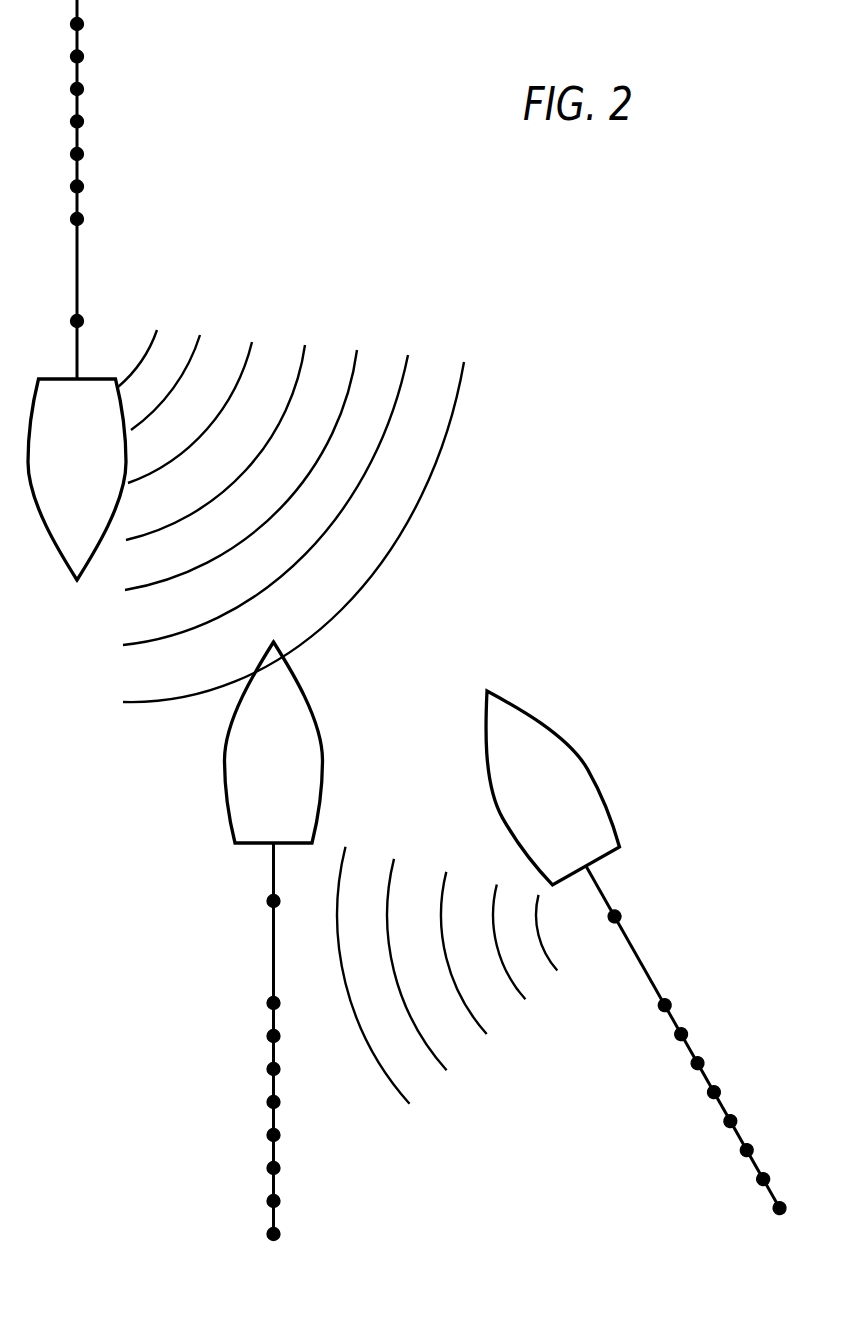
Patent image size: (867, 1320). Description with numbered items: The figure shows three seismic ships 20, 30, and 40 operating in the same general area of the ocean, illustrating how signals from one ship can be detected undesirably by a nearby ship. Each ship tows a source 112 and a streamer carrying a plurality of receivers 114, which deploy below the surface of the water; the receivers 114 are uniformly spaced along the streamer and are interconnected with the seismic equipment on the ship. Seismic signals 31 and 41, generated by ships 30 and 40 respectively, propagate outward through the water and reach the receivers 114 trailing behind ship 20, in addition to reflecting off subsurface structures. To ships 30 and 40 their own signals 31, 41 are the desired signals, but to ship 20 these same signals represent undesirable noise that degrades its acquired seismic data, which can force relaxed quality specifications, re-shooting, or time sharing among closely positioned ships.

The seismic ship 20 is at (274, 742).
The seismic ship 30 is at (77, 479).
The seismic ship 40 is at (536, 778).
The seismic signal 31 is at (291, 473).
The seismic signal 41 is at (447, 949).
The source 112 is at (84, 319).
The receivers 114 is at (82, 187).